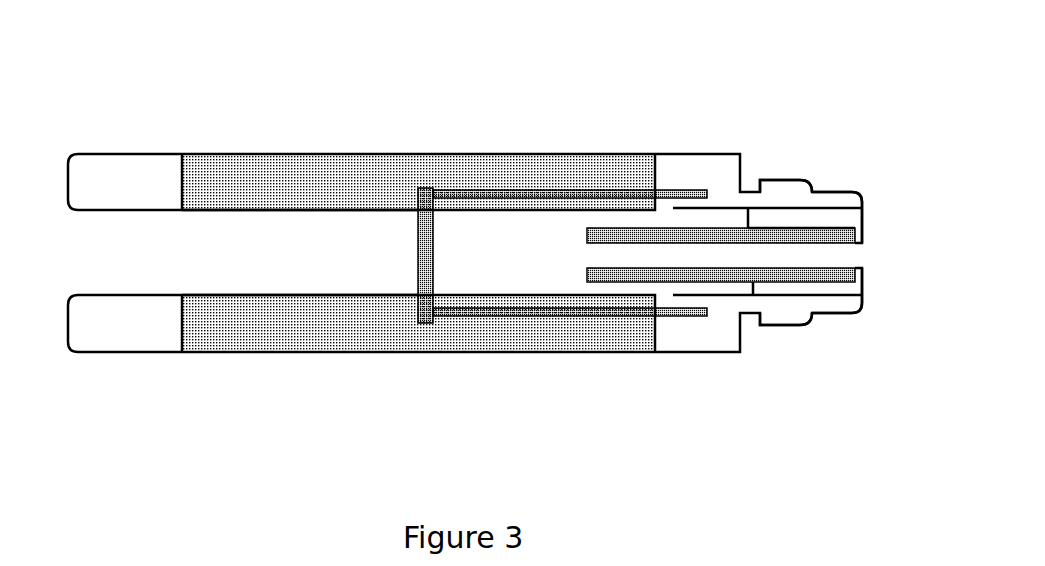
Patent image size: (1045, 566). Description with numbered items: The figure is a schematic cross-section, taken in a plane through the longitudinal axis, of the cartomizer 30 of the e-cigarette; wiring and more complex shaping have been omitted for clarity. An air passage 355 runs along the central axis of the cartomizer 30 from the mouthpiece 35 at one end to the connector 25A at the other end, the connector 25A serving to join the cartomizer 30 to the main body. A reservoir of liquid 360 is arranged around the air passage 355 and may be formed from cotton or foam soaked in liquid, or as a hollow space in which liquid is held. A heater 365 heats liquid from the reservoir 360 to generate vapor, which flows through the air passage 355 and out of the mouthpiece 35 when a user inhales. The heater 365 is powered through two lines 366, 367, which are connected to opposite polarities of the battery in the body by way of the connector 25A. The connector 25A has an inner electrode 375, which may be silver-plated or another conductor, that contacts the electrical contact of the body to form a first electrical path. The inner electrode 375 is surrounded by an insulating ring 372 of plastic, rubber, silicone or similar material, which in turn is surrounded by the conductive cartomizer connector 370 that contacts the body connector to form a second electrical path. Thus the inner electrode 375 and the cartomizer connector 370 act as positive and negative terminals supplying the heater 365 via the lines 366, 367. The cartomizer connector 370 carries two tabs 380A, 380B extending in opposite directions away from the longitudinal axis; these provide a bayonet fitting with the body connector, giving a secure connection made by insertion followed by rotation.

The connector 25A is at (832, 332).
The cartomizer 30 is at (268, 378).
The mouthpiece 35 is at (114, 380).
The air passage 355 is at (243, 250).
The reservoir of liquid 360 is at (303, 183).
The heater 365 is at (419, 222).
The power line 366 is at (568, 190).
The power line 367 is at (528, 312).
The cartomizer connector 370 is at (823, 202).
The insulating ring 372 is at (840, 217).
The inner electrode 375 is at (812, 277).
The tab 380A is at (783, 190).
The tab 380B is at (783, 315).